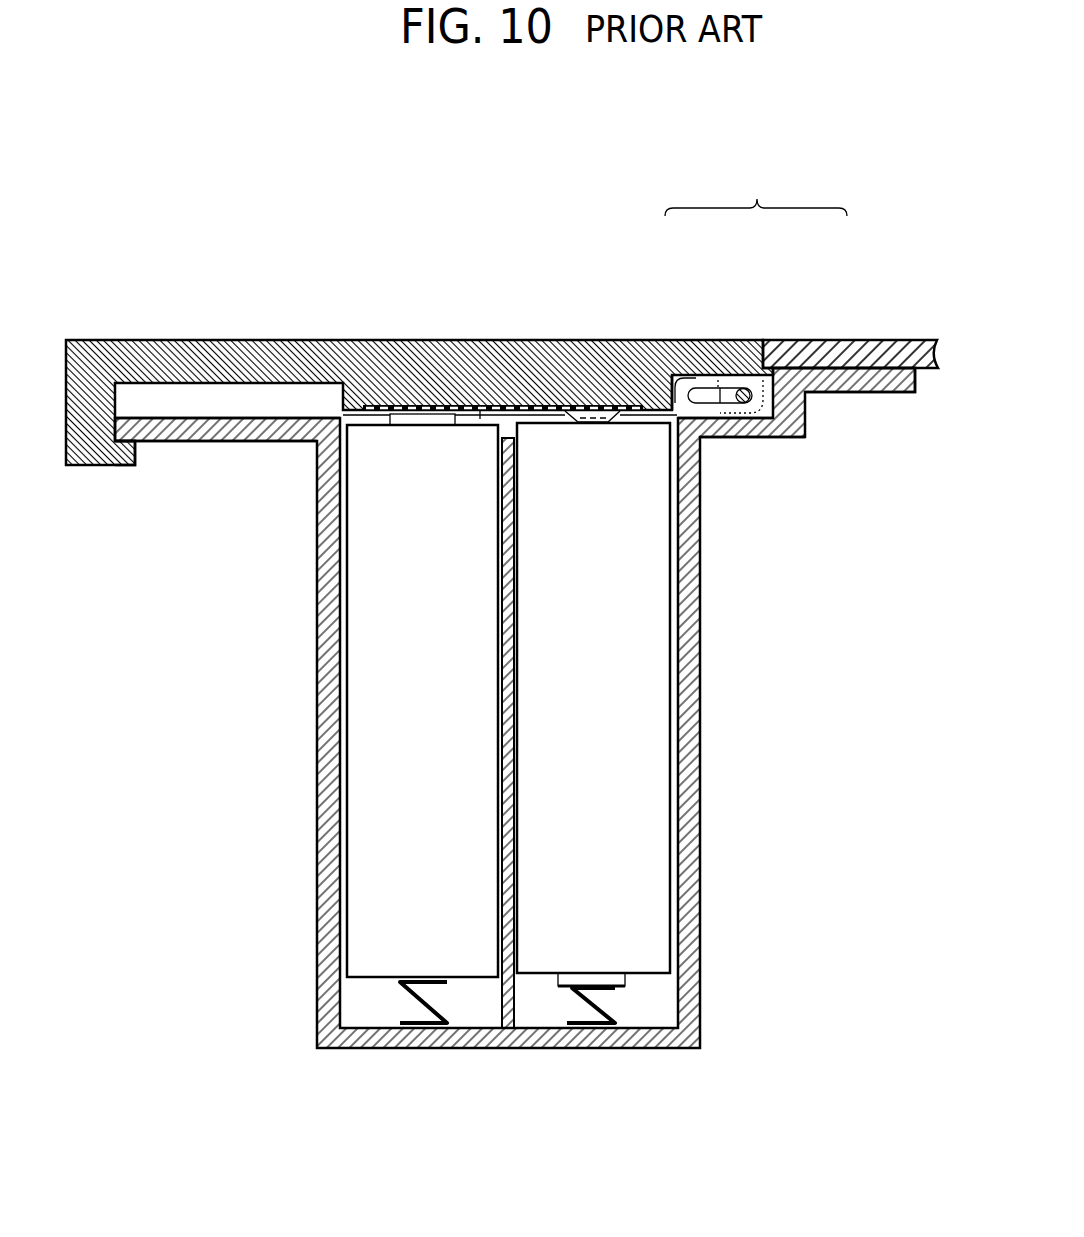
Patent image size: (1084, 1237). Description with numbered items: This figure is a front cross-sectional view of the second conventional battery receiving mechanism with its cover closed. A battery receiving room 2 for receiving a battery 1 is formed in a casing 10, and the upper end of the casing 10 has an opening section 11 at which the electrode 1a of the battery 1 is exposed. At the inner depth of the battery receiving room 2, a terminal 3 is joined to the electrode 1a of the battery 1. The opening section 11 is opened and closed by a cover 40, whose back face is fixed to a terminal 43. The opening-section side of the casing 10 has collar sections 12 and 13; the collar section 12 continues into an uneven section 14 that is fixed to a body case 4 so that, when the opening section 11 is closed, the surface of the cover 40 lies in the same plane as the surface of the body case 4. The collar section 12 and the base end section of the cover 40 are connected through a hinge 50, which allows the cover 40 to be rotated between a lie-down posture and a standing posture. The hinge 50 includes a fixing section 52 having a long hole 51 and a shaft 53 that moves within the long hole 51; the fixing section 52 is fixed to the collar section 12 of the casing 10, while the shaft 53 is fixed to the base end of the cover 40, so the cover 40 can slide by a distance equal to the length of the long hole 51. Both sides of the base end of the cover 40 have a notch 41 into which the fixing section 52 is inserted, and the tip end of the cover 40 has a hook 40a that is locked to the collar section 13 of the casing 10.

The battery 1 is at (365, 788).
The electrode 1a is at (642, 427).
The battery receiving room 2 is at (482, 1005).
The terminal 3 is at (420, 1002).
The body case 4 is at (896, 357).
The casing 10 is at (692, 635).
The opening section 11 is at (480, 418).
The collar section 12 is at (727, 425).
The collar section 13 is at (248, 433).
The uneven section 14 is at (805, 412).
The cover 40 is at (255, 360).
The hook 40a is at (130, 455).
The notch 41 is at (672, 400).
The terminal 43 is at (403, 405).
The hinge 50 is at (756, 188).
The long hole 51 is at (698, 388).
The fixing section 52 is at (728, 385).
The shaft 53 is at (747, 392).